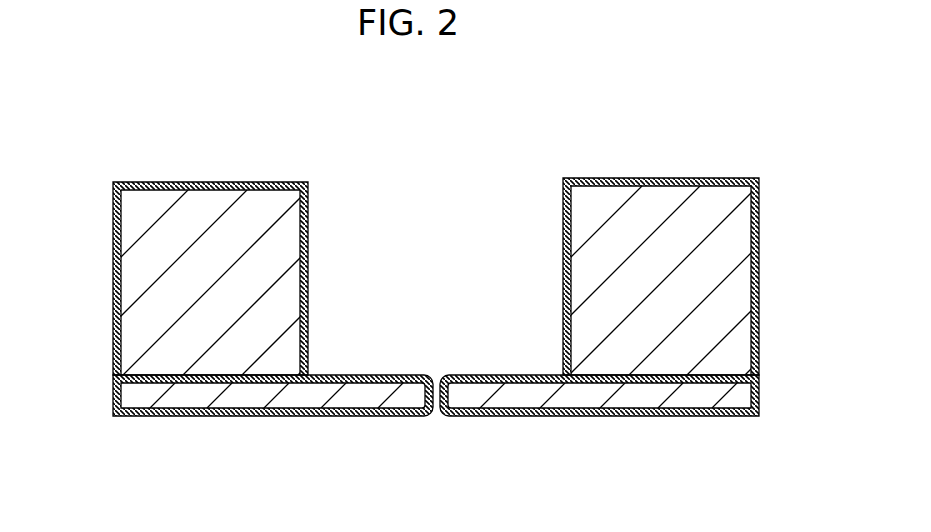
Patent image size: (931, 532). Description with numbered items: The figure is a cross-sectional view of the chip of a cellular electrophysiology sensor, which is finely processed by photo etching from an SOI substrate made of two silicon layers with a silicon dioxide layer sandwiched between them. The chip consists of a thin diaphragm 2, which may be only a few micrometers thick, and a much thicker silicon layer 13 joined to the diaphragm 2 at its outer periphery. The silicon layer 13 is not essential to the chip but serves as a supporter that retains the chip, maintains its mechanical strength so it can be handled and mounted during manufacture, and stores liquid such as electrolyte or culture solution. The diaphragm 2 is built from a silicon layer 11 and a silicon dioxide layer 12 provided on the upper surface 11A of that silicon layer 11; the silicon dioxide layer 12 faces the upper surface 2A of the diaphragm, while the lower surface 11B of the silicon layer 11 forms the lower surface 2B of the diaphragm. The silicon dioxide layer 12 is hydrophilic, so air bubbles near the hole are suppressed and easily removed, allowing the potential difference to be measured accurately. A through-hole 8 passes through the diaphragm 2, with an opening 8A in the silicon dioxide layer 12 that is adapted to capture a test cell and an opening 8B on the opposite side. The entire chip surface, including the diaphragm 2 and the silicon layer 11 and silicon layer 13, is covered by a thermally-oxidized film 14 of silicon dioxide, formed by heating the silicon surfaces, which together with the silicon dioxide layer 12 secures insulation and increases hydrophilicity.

The diaphragm 2 is at (545, 310).
The upper surface of diaphragm 2A is at (403, 375).
The lower surface of diaphragm 2B is at (498, 416).
The through-hole 8 is at (437, 397).
The opening 8A is at (430, 375).
The opening 8B is at (437, 412).
The silicon layer 11 is at (150, 392).
The upper surface of silicon layer 11A is at (327, 375).
The lower surface of silicon layer 11B is at (333, 416).
The silicon dioxide layer 12 is at (362, 374).
The silicon layer 13 is at (248, 207).
The thermally-oxidized film 14 is at (190, 182).